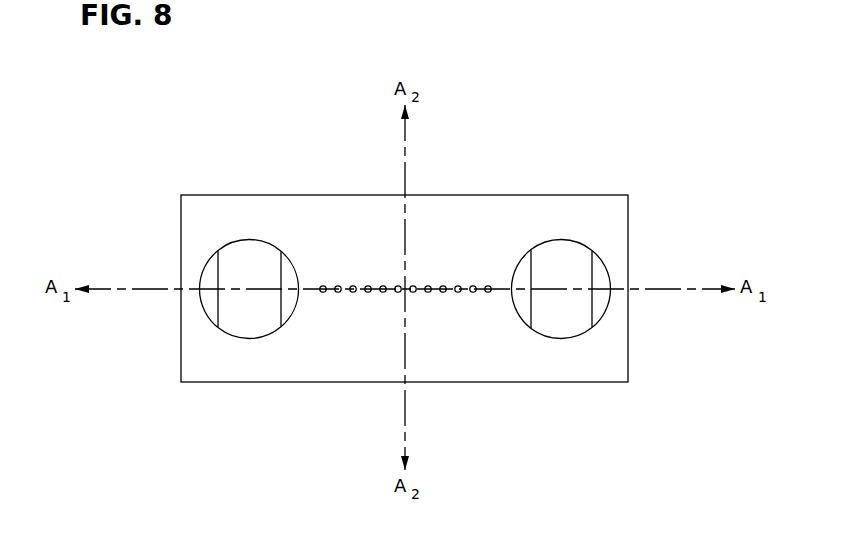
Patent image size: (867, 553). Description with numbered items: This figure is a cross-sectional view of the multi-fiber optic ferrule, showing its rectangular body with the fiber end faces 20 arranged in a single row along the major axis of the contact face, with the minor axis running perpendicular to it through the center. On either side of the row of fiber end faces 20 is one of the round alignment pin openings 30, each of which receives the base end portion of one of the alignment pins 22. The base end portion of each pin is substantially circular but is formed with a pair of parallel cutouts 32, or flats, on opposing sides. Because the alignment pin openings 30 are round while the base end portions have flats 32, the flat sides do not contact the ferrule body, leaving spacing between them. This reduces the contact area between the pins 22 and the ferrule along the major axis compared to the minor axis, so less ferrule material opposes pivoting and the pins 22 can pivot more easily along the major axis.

The optical fiber end faces 20 is at (315, 283).
The alignment pins 22 is at (248, 260).
The alignment pin openings 30 is at (212, 277).
The parallel cutouts 32 is at (216, 300).